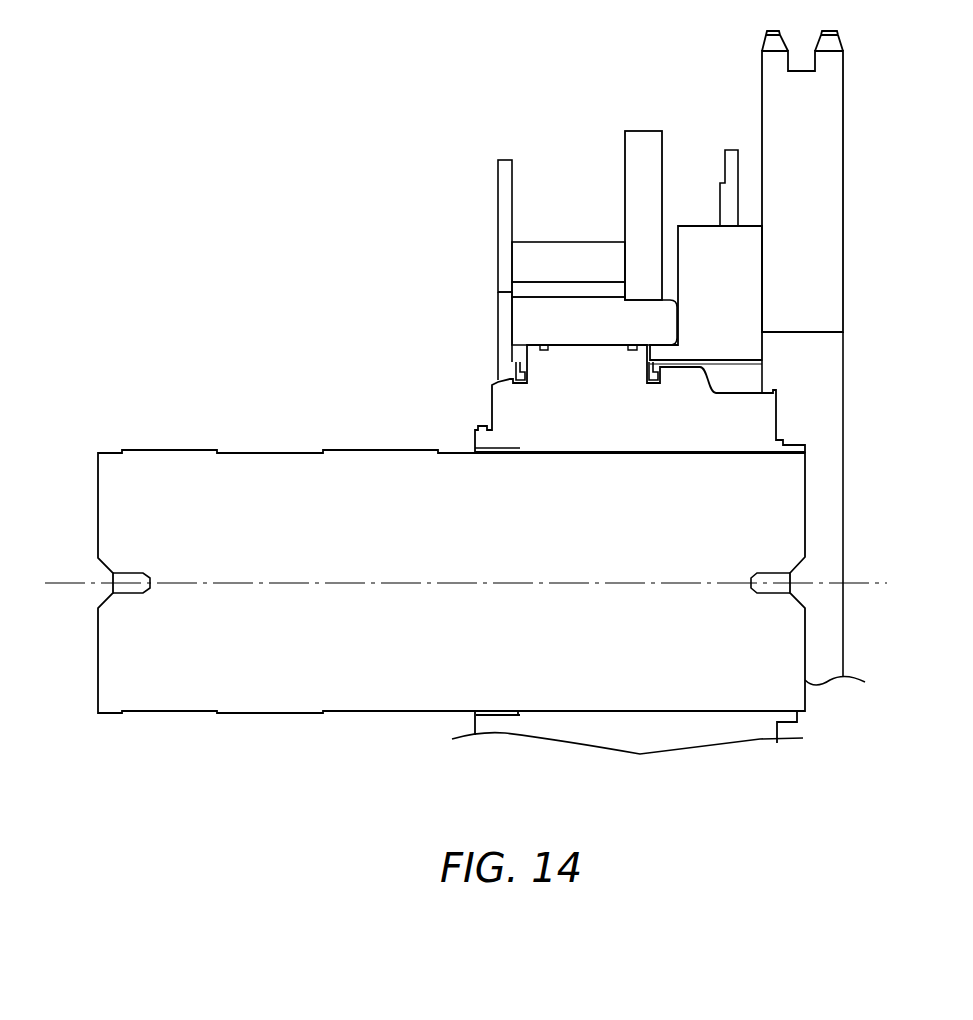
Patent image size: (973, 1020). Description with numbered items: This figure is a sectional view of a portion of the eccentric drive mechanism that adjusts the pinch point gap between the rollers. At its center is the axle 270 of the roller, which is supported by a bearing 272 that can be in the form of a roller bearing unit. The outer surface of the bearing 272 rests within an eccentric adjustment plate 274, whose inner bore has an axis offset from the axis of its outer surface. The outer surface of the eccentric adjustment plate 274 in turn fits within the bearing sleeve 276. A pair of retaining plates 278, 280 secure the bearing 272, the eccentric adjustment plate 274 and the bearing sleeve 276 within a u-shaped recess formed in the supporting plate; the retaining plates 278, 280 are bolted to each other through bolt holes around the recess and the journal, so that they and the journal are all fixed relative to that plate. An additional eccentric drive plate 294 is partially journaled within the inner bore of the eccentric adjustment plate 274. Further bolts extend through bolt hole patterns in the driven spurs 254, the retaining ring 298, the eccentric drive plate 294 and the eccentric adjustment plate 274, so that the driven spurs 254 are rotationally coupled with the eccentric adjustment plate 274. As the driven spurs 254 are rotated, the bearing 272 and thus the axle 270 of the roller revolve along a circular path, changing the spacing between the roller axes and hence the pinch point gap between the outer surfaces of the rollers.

The driven spur 254 is at (845, 190).
The axle 270 is at (170, 713).
The bearing 272 is at (490, 410).
The eccentric adjustment plate 274 is at (508, 335).
The bearing sleeve 276 is at (535, 291).
The retaining plate 278 is at (643, 131).
The retaining plate 280 is at (500, 177).
The eccentric drive plate 294 is at (760, 345).
The retaining ring 298 is at (732, 148).